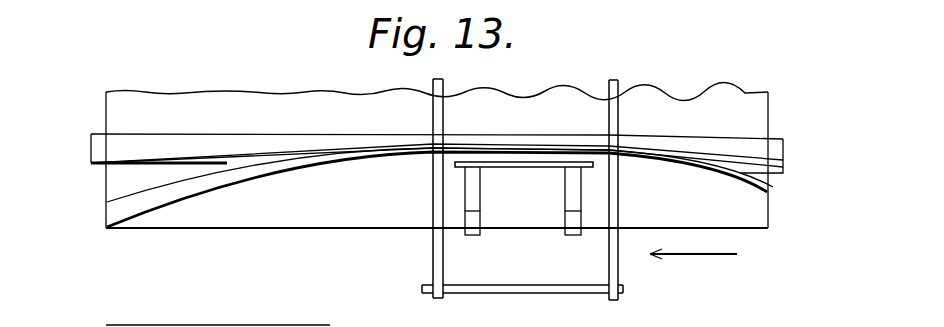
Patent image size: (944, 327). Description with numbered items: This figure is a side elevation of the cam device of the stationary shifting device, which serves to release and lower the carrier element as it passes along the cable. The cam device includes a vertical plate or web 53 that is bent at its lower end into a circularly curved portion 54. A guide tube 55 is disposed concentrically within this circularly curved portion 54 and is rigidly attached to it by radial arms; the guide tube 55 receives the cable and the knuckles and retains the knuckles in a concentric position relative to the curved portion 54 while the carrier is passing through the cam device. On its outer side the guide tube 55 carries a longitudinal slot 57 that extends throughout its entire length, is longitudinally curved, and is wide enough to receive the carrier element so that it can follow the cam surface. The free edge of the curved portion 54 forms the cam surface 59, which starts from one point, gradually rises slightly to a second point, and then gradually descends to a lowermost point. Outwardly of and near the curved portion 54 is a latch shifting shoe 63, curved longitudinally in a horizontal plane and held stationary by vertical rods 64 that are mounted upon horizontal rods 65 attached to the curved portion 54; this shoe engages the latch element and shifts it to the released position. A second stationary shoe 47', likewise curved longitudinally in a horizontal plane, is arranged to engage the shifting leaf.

The vertical plate or web 53 is at (192, 103).
The circularly curved portion 54 is at (282, 218).
The guide tube 55 is at (98, 137).
The longitudinal slot 57 is at (277, 150).
The cam surface 59 is at (110, 210).
The latch shifting shoe 63 is at (521, 165).
The vertical rods 64 is at (578, 183).
The horizontal rods 65 is at (472, 236).
The second stationary shoe 47' is at (522, 276).